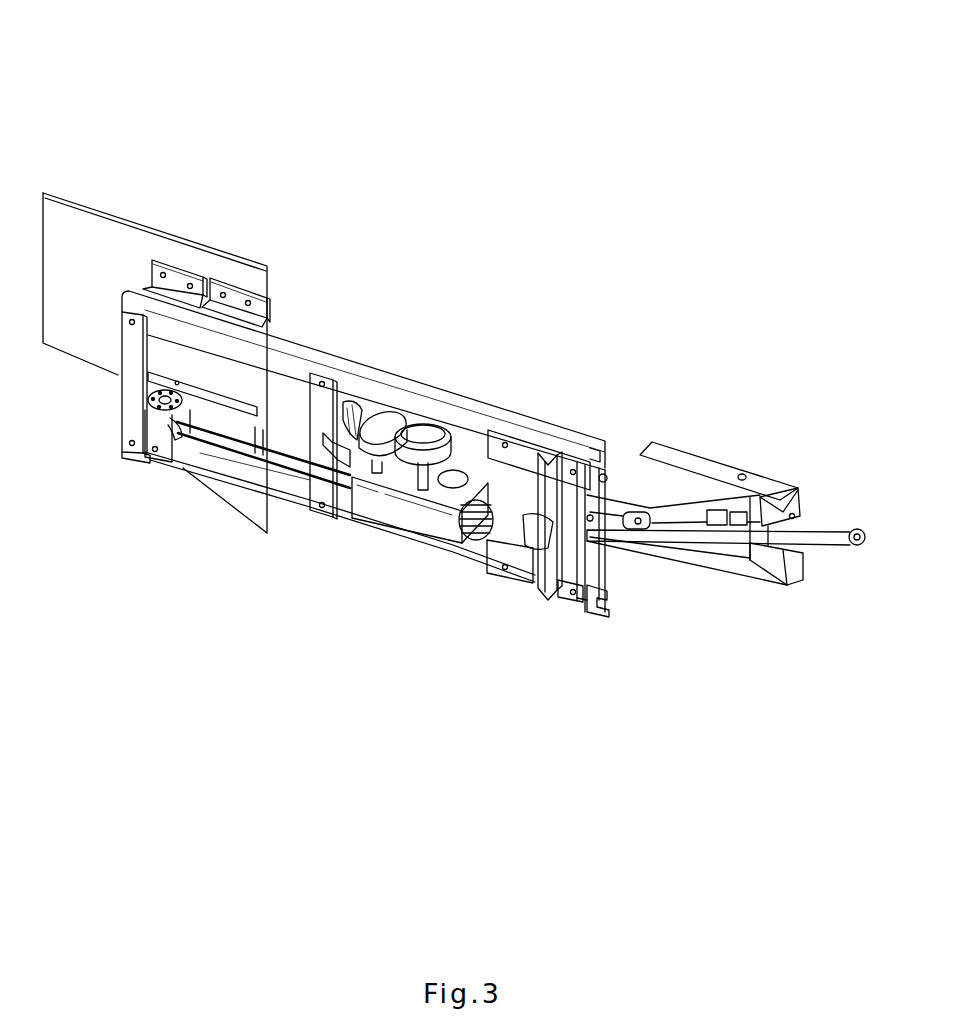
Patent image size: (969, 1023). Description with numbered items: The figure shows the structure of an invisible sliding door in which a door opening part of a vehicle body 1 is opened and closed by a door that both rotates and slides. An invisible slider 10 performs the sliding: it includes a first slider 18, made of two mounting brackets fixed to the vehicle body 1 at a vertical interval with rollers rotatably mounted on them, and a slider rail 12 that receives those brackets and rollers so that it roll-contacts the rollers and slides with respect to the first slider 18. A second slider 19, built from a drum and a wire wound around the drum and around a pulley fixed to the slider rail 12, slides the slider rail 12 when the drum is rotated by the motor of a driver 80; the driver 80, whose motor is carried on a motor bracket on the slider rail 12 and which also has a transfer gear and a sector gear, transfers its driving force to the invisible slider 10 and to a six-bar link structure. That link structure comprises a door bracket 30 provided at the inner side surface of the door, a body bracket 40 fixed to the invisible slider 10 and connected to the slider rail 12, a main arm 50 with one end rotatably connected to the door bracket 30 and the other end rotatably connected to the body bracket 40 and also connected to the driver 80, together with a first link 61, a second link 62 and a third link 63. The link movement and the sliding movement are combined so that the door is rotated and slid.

The vehicle body 1 is at (94, 218).
The invisible slider 10 is at (185, 57).
The slider rail 12 is at (293, 353).
The first slider 18 is at (177, 277).
The second slider 19 is at (228, 427).
The door bracket 30 is at (780, 493).
The body bracket 40 is at (578, 553).
The main arm 50 is at (690, 487).
The first link 61 is at (617, 530).
The second link 62 is at (775, 540).
The third link 63 is at (604, 474).
The driver 80 is at (436, 430).